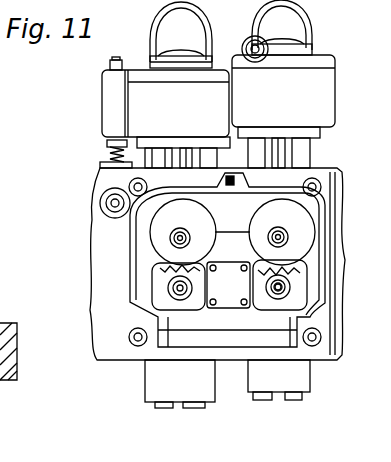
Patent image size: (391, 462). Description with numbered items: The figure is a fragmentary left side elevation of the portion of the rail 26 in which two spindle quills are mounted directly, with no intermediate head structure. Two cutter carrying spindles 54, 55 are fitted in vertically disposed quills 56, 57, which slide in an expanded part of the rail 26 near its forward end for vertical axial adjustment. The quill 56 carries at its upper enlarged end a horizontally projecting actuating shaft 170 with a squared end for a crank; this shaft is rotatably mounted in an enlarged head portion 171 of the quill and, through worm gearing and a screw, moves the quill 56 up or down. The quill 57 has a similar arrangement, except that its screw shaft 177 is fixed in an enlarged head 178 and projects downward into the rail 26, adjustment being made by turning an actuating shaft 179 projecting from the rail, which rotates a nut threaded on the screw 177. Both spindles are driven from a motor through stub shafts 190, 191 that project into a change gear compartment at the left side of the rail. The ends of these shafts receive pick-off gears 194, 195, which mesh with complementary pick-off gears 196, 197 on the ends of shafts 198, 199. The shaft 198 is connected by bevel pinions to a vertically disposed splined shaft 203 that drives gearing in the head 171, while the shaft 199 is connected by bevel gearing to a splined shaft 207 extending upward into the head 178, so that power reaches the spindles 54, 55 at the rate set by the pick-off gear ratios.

The actuating shaft 170 is at (262, 37).
The enlarged head portion 171 is at (252, 85).
The enlarged head 178 is at (135, 95).
The splined shaft 207 is at (187, 156).
The splined shaft 203 is at (292, 137).
The screw shaft 177 is at (107, 152).
The actuating shaft 179 is at (100, 203).
The rail 26 is at (92, 235).
The shaft 199 is at (183, 232).
The pick-off gear 197 is at (208, 220).
The pick-off gear 196 is at (248, 232).
The shaft 198 is at (282, 232).
The pick-off gear 195 is at (178, 280).
The stub shaft 191 is at (228, 285).
The stub shaft 190 is at (266, 289).
The pick-off gear 194 is at (280, 279).
The quill 57 is at (150, 388).
The cutter carrying spindle 55 is at (162, 408).
The quill 56 is at (302, 379).
The cutter carrying spindle 54 is at (288, 398).